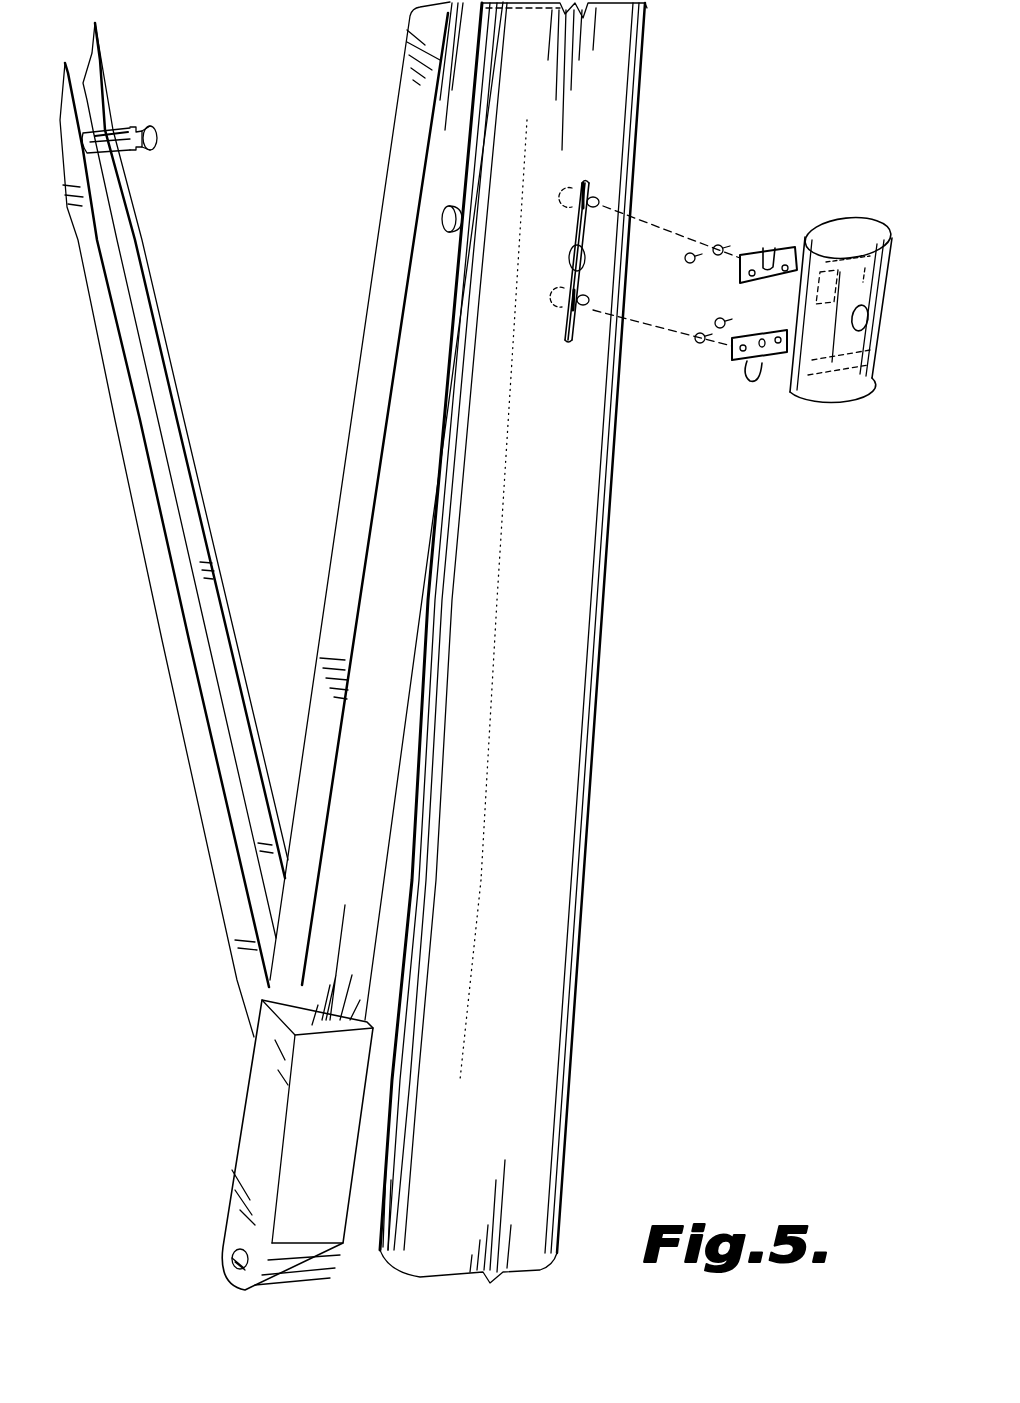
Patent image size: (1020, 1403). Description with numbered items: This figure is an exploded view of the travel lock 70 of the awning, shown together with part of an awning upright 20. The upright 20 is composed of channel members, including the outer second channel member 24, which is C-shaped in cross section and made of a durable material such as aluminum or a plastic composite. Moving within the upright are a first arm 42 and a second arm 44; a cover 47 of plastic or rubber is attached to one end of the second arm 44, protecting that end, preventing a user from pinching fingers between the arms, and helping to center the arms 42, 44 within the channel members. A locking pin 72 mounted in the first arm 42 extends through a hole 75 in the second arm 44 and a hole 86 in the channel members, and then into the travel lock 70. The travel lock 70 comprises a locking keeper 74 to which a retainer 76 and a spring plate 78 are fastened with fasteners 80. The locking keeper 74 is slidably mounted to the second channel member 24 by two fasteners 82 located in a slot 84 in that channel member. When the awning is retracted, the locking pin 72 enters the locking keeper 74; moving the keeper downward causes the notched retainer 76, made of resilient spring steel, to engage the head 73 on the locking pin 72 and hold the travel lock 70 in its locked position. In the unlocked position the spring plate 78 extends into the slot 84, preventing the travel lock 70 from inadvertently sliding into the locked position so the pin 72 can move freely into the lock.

The awning upright 20 is at (610, 1022).
The second channel member 24 is at (560, 813).
The first arm 42 is at (150, 545).
The second arm 44 is at (370, 406).
The cover 47 is at (247, 1133).
The travel lock 70 is at (721, 312).
The locking pin 72 is at (120, 127).
The head 73 is at (160, 137).
The locking keeper 74 is at (846, 414).
The hole 75 is at (437, 212).
The retainer 76 is at (767, 246).
The spring plate 78 is at (748, 380).
The fasteners 80 is at (718, 244).
The fasteners 82 is at (598, 201).
The slot 84 is at (595, 185).
The hole 86 is at (586, 260).